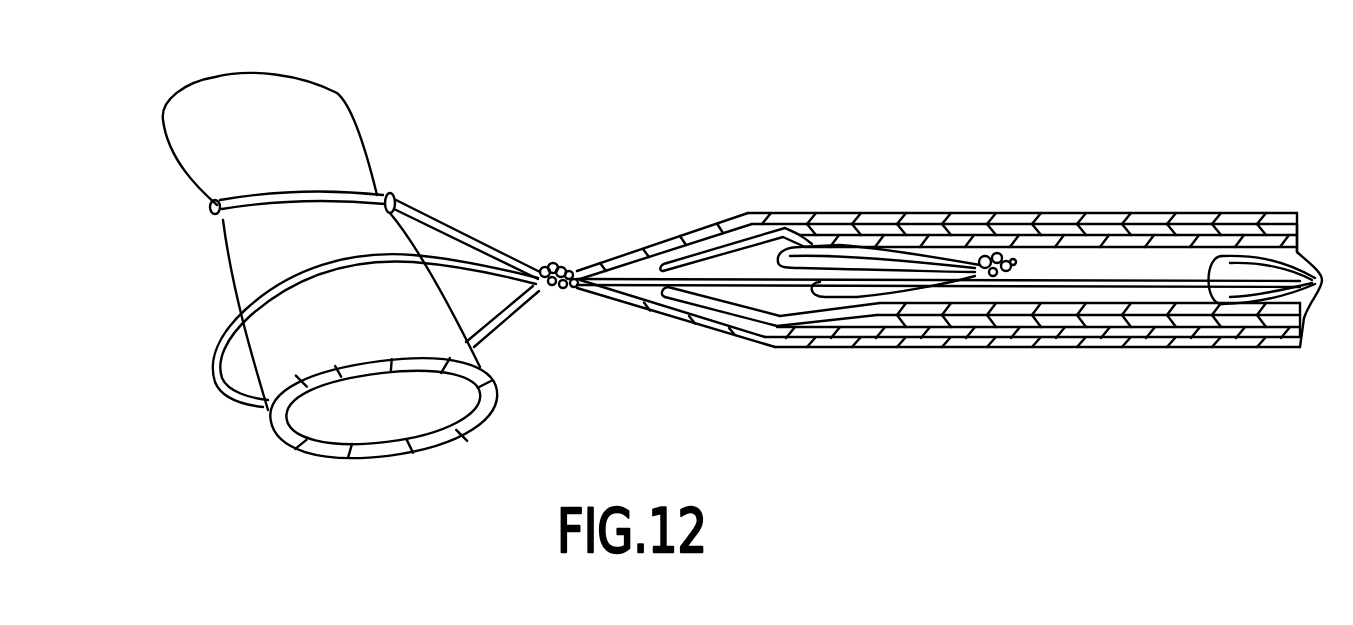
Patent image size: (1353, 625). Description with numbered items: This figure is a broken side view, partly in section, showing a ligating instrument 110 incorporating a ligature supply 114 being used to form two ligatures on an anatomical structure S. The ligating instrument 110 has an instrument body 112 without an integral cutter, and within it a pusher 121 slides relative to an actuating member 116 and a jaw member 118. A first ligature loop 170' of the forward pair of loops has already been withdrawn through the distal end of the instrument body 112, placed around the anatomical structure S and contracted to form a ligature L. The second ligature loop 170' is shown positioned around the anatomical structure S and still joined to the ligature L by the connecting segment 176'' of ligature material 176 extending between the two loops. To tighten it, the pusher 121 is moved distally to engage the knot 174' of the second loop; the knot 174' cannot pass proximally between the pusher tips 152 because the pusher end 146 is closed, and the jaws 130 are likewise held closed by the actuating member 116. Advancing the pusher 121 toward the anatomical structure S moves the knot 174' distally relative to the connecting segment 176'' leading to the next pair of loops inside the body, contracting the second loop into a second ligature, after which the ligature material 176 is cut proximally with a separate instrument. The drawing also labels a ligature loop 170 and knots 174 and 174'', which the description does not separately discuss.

The ligating instrument 110 is at (1282, 197).
The instrument body 112 is at (1269, 354).
The ligature supply 114 is at (1082, 283).
The actuating member 116 is at (1010, 226).
The jaw member 118 is at (1110, 317).
The pusher 121 is at (868, 225).
The jaws 130 is at (703, 245).
The pusher end 146 is at (650, 234).
The pusher tips 152 is at (576, 265).
The suture 170 is at (879, 264).
The ligature loop 170' is at (302, 303).
The knot 174 is at (954, 264).
The knot 174' is at (427, 175).
The hitch 174'' is at (519, 345).
The length of ligature material 176 is at (946, 214).
The connecting segment 176'' is at (571, 290).
The anatomical structure S is at (198, 142).
The ligature L is at (282, 191).